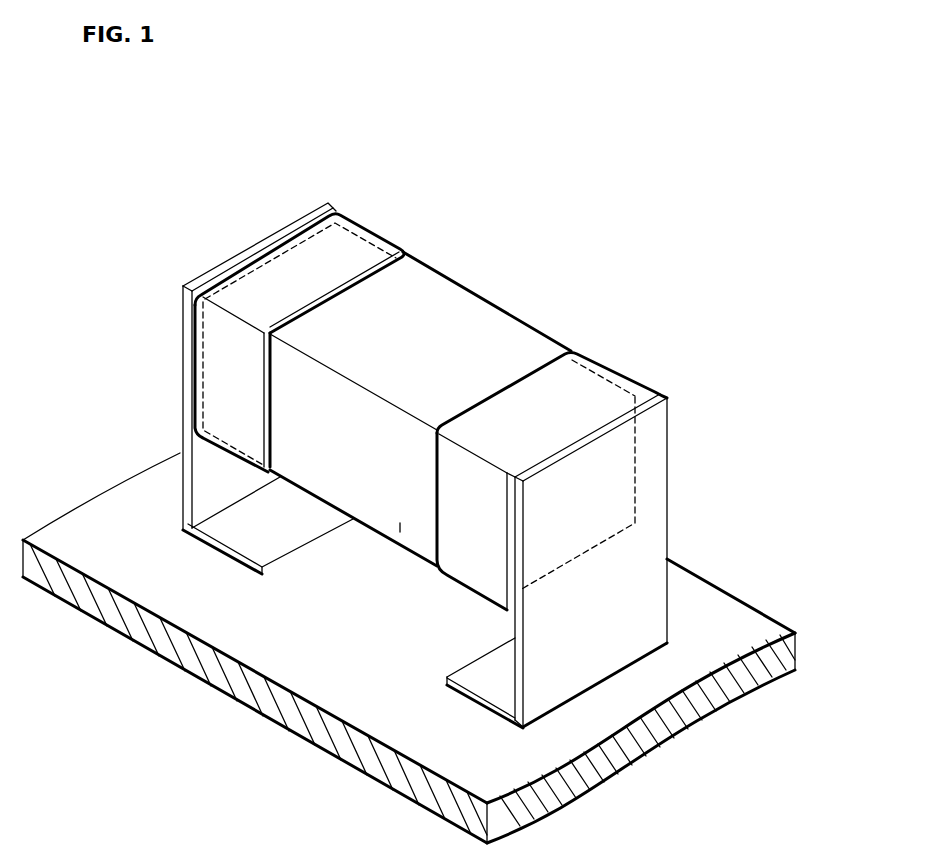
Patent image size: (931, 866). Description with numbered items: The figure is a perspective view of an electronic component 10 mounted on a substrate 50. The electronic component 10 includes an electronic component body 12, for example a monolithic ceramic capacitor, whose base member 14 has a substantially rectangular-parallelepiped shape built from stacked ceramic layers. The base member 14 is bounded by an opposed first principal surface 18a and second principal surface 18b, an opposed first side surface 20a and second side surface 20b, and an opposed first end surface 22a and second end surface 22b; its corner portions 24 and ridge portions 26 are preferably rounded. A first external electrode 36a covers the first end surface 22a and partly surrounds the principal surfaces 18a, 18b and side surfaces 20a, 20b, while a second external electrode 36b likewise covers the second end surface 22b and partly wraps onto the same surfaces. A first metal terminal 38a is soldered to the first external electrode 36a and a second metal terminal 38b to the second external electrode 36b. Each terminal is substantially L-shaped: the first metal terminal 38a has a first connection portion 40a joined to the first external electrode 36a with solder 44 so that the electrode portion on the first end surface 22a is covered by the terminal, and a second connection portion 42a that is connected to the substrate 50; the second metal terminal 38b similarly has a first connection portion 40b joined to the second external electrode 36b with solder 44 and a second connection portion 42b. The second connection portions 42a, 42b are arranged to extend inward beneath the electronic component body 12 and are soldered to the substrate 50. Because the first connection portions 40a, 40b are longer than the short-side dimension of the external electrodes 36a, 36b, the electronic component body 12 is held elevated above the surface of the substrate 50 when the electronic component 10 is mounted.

The electronic component 10 is at (406, 465).
The electronic component body 12 is at (364, 454).
The base member 14 is at (434, 293).
The first principal surface 18a is at (447, 305).
The second principal surface 18b is at (400, 533).
The first side surface 20a is at (348, 484).
The second side surface 20b is at (482, 324).
The first end surface 22a is at (204, 423).
The second end surface 22b is at (549, 616).
The corner portions 24 is at (338, 218).
The ridge portions 26 is at (482, 331).
The first external electrode 36a is at (368, 222).
The second external electrode 36b is at (600, 353).
The first metal terminal 38a is at (220, 264).
The second metal terminal 38b is at (662, 458).
The first connection portion 40a is at (195, 350).
The first connection portion 40b is at (644, 487).
The second connection portion 42a is at (200, 553).
The second connection portion 42b is at (476, 694).
The solder 44 is at (200, 325).
The substrate 50 is at (58, 538).